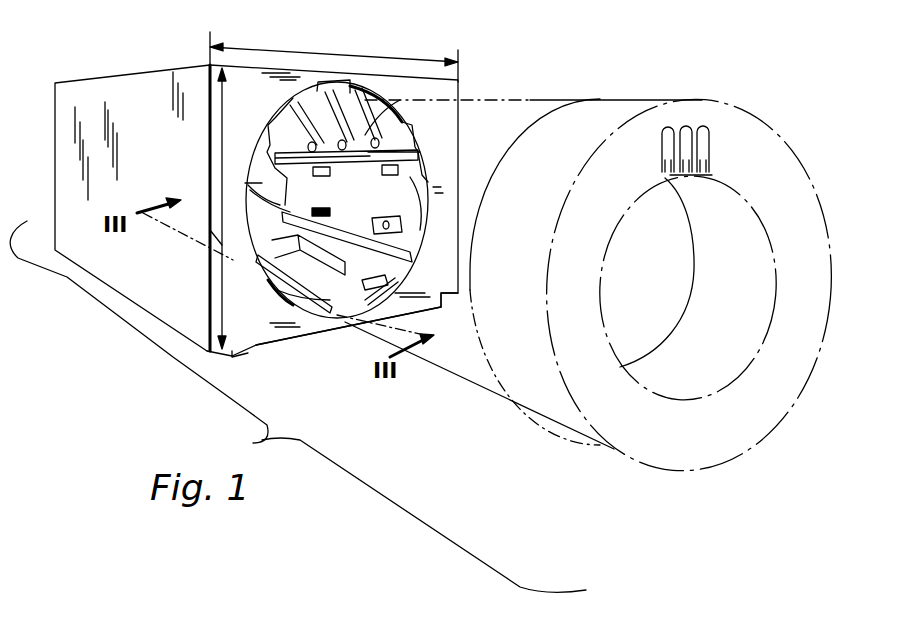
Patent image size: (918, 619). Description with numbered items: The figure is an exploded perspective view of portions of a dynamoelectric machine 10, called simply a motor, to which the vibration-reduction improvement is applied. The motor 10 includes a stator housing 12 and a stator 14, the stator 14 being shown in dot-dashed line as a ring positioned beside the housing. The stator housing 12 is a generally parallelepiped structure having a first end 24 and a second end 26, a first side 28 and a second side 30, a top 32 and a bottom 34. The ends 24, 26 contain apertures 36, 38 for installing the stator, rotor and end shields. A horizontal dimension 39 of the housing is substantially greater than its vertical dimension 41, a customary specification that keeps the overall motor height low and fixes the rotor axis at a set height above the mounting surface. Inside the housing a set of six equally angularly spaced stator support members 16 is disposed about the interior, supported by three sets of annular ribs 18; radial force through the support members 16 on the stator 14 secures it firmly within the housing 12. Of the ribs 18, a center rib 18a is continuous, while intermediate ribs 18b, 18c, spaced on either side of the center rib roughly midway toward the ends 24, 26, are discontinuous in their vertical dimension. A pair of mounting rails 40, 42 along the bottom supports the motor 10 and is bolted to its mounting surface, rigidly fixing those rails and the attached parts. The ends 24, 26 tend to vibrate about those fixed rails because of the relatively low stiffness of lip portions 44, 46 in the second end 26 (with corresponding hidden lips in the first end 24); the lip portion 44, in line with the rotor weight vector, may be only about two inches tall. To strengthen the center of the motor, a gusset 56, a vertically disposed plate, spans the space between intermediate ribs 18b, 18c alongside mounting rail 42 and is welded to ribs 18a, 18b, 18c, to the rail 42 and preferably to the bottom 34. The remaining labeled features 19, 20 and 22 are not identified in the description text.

The dynamoelectric machine 10 is at (165, 371).
The stator housing 12 is at (418, 68).
The stator 14 is at (815, 183).
The stator support members 16 is at (407, 233).
The ribs 18 is at (367, 110).
The center rib 18a is at (356, 195).
The intermediate rib 18b is at (295, 228).
The intermediate rib 18c is at (393, 267).
The core surface 19 is at (372, 140).
The terminals 20 is at (709, 150).
The rim 22 is at (749, 307).
The first end 24 is at (262, 188).
The second end 26 is at (443, 130).
The first side 28 is at (107, 262).
The second side 30 is at (410, 177).
The top 32 is at (261, 66).
The bottom 34 is at (400, 318).
The aperture 36 is at (280, 185).
The aperture 38 is at (253, 185).
The horizontal dimension 39 is at (317, 50).
The mounting rail 40 is at (247, 354).
The vertical dimension 41 is at (200, 243).
The mounting rail 42 is at (466, 312).
The lip portion 44 is at (337, 320).
The lip portion 46 is at (353, 80).
The gusset 56 is at (277, 290).